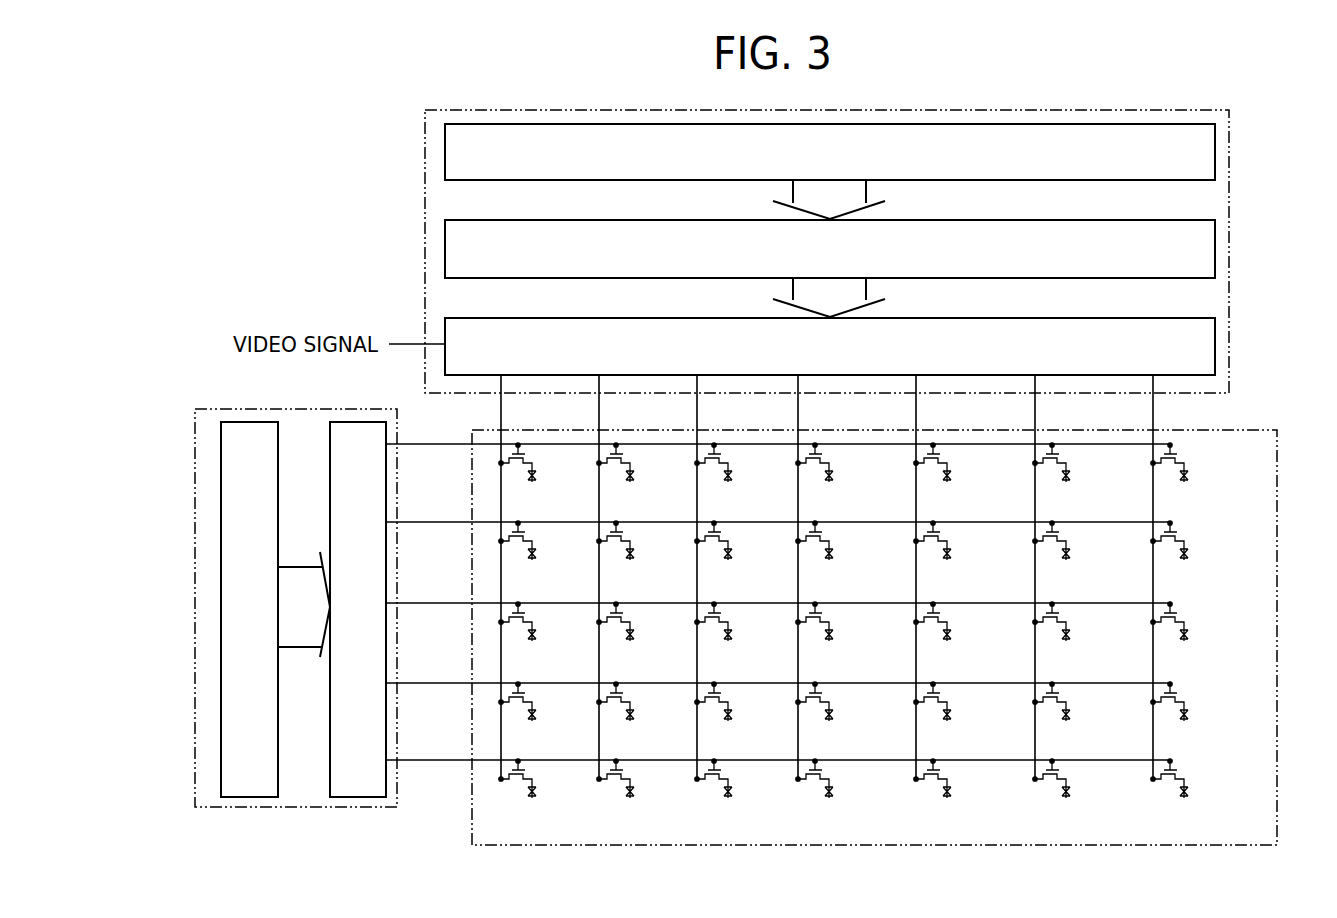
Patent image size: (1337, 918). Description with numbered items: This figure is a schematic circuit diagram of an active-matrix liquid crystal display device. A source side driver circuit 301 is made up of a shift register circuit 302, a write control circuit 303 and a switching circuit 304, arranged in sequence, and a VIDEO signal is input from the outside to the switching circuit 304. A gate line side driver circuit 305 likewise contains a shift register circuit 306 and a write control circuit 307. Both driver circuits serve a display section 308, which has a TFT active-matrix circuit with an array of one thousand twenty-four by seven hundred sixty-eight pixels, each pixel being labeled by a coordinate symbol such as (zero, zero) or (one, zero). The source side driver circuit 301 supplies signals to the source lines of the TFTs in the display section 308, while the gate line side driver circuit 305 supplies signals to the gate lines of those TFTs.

The source side driver circuit 301 is at (506, 110).
The shift register circuit 302 is at (848, 172).
The write control circuit 303 is at (848, 264).
The switching circuit 304 is at (848, 360).
The gate line side driver circuit 305 is at (195, 409).
The shift register circuit 306 is at (268, 480).
The write control circuit 307 is at (375, 480).
The display section 308 is at (1277, 507).